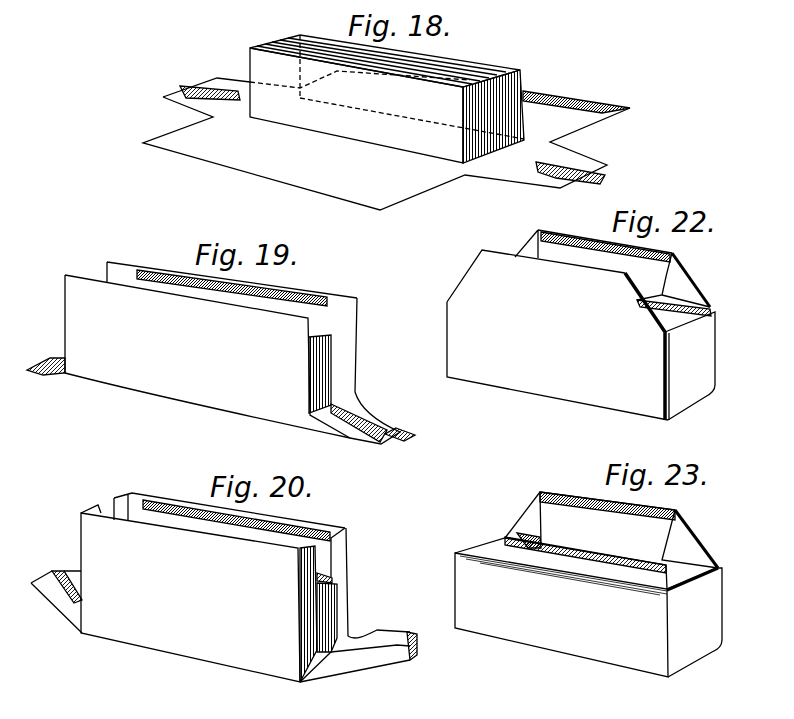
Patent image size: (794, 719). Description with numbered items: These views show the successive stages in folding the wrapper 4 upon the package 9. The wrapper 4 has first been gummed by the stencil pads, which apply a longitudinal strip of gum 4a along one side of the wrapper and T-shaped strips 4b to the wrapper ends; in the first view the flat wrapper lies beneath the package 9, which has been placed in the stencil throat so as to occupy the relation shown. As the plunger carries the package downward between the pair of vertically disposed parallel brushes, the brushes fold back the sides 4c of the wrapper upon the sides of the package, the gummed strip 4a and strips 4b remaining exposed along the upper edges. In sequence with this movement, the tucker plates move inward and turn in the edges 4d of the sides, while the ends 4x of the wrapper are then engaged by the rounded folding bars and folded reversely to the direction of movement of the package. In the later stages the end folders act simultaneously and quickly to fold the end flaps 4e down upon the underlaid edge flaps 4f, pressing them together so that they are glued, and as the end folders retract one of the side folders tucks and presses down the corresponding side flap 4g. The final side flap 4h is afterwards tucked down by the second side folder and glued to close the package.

In FIG. 18, the package 9 is at (505, 74).
In FIG. 18, the wrapper 4 is at (387, 197).
In FIG. 18, the longitudinal strip of gum 4a is at (570, 98).
In FIG. 19, the longitudinal strip of gum 4a is at (295, 296).
In FIG. 18, the T-shaped strips 4b is at (613, 152).
In FIG. 19, the T-shaped strips 4b is at (416, 427).
In FIG. 19, the sides of the wrapper 4c is at (252, 398).
In FIG. 20, the sides of the wrapper 4c is at (178, 635).
In FIG. 22, the sides of the wrapper 4c is at (582, 387).
In FIG. 23, the sides of the wrapper 4c is at (610, 643).
In FIG. 20, the edges of the sides 4d is at (307, 640).
In FIG. 22, the end flaps 4e is at (692, 313).
In FIG. 23, the end flaps 4e is at (546, 542).
In FIG. 22, the edge flaps 4f is at (647, 296).
In FIG. 23, the edge flaps 4f is at (662, 560).
In FIG. 23, the side flap 4g is at (557, 563).
In FIG. 23, the final side flap 4h is at (663, 512).
In FIG. 19, the ends of the wrapper 4x is at (340, 430).
In FIG. 20, the ends of the wrapper 4x is at (373, 660).
In FIG. 22, the ends of the wrapper 4x is at (693, 377).
In FIG. 23, the ends of the wrapper 4x is at (695, 640).